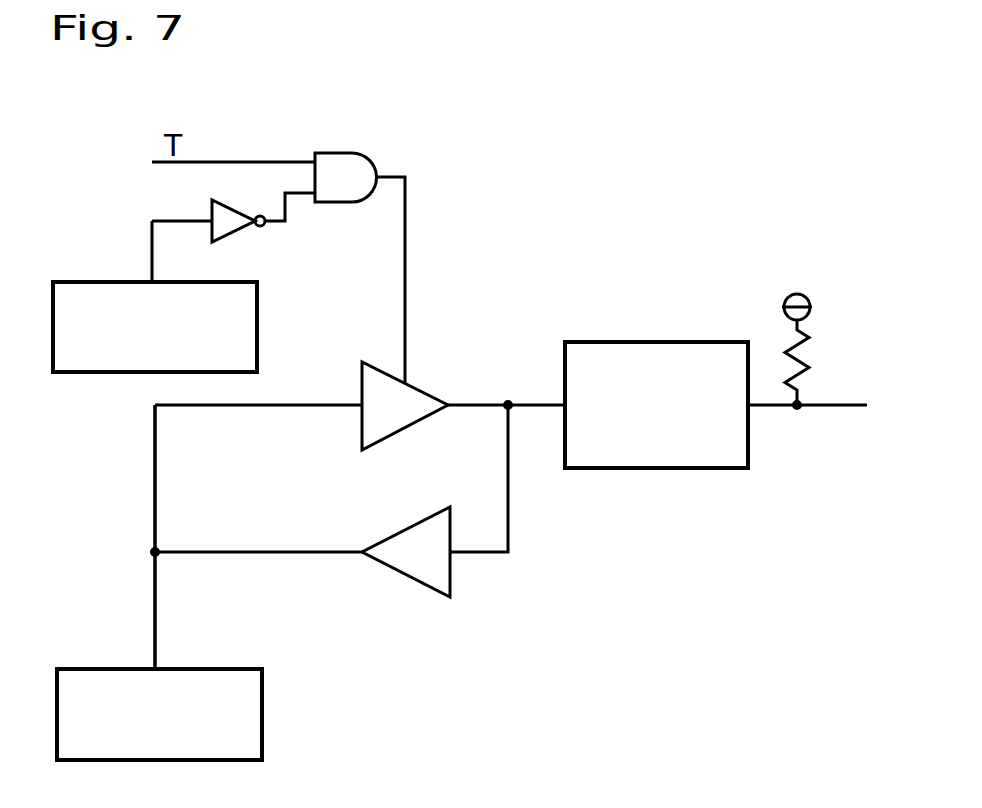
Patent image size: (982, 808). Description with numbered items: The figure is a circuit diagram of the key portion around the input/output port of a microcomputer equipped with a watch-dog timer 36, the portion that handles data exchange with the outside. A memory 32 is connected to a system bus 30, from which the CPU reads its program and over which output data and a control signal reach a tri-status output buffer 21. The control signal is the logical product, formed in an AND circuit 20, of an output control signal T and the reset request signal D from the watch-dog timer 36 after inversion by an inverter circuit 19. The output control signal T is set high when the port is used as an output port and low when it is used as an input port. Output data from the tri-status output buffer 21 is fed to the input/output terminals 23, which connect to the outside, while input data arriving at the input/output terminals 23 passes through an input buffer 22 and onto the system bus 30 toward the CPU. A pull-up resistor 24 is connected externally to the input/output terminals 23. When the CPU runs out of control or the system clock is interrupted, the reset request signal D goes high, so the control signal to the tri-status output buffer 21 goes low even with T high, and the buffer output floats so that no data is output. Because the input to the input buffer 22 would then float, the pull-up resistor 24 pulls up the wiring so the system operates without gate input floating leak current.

The inverter circuit 19 is at (248, 236).
The AND circuit 20 is at (333, 153).
The tri-status output buffer 21 is at (424, 392).
The input buffer 22 is at (405, 576).
The input/output terminals 23 is at (700, 340).
The pull-up resistor 24 is at (812, 350).
The system bus 30 is at (157, 612).
The memory 32 is at (262, 728).
The watch-dog timer 36 is at (257, 335).